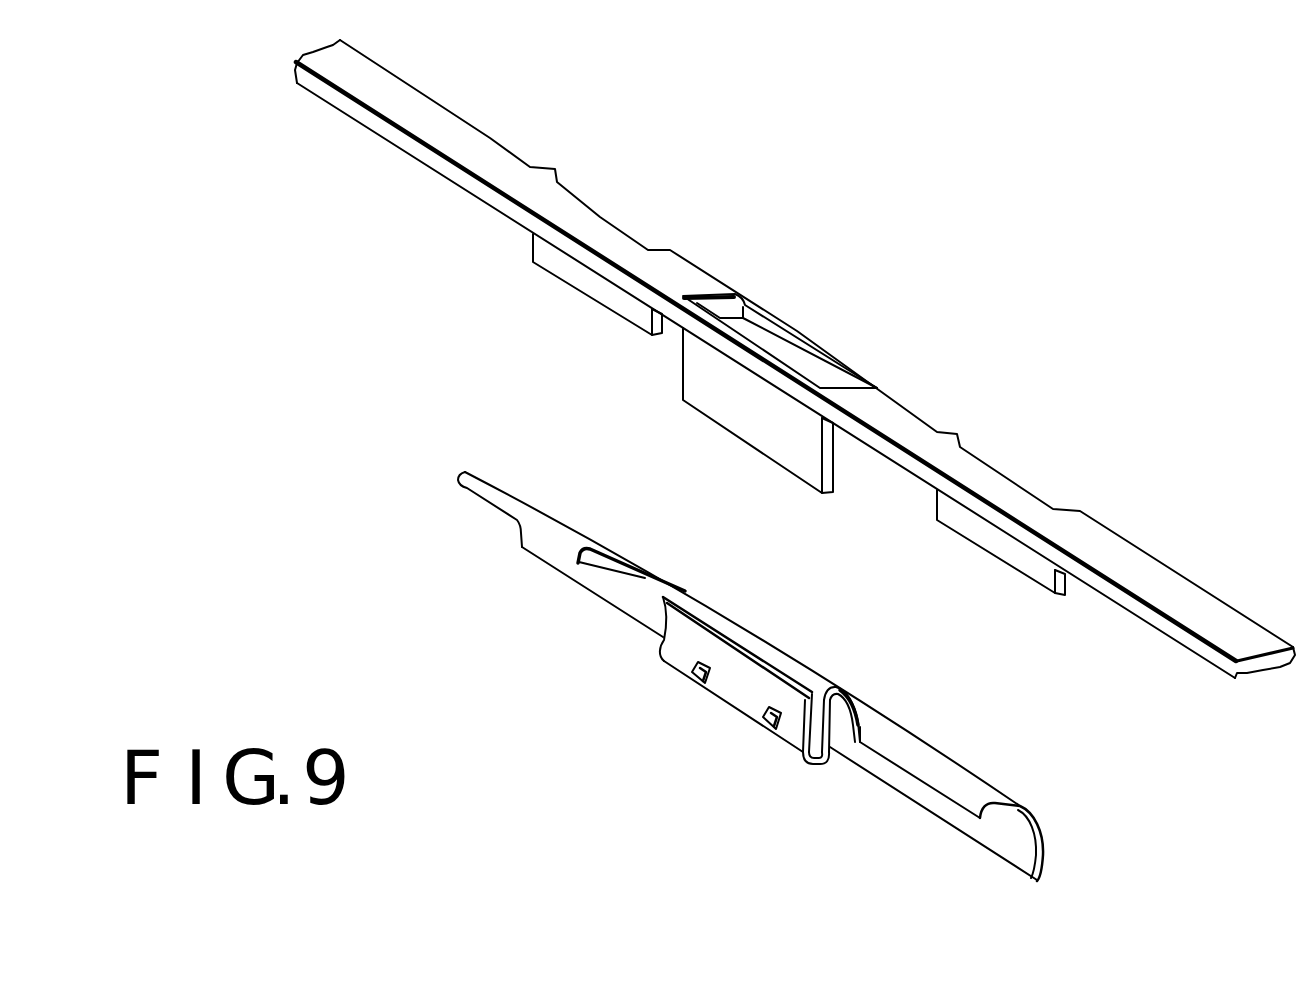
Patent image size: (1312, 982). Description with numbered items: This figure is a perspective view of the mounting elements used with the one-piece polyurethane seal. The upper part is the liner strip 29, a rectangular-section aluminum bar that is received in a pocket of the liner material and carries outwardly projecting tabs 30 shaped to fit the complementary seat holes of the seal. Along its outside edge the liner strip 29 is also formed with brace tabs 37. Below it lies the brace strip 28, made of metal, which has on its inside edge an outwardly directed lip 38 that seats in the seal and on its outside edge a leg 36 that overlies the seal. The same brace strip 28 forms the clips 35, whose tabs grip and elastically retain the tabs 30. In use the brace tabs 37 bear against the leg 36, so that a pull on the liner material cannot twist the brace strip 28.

The brace strip 28 is at (613, 617).
The liner strip 29 is at (453, 132).
The tab 30 is at (730, 390).
The clip 35 is at (755, 678).
The leg 36 is at (1043, 851).
The brace tab 37 is at (573, 267).
The lip 38 is at (490, 490).